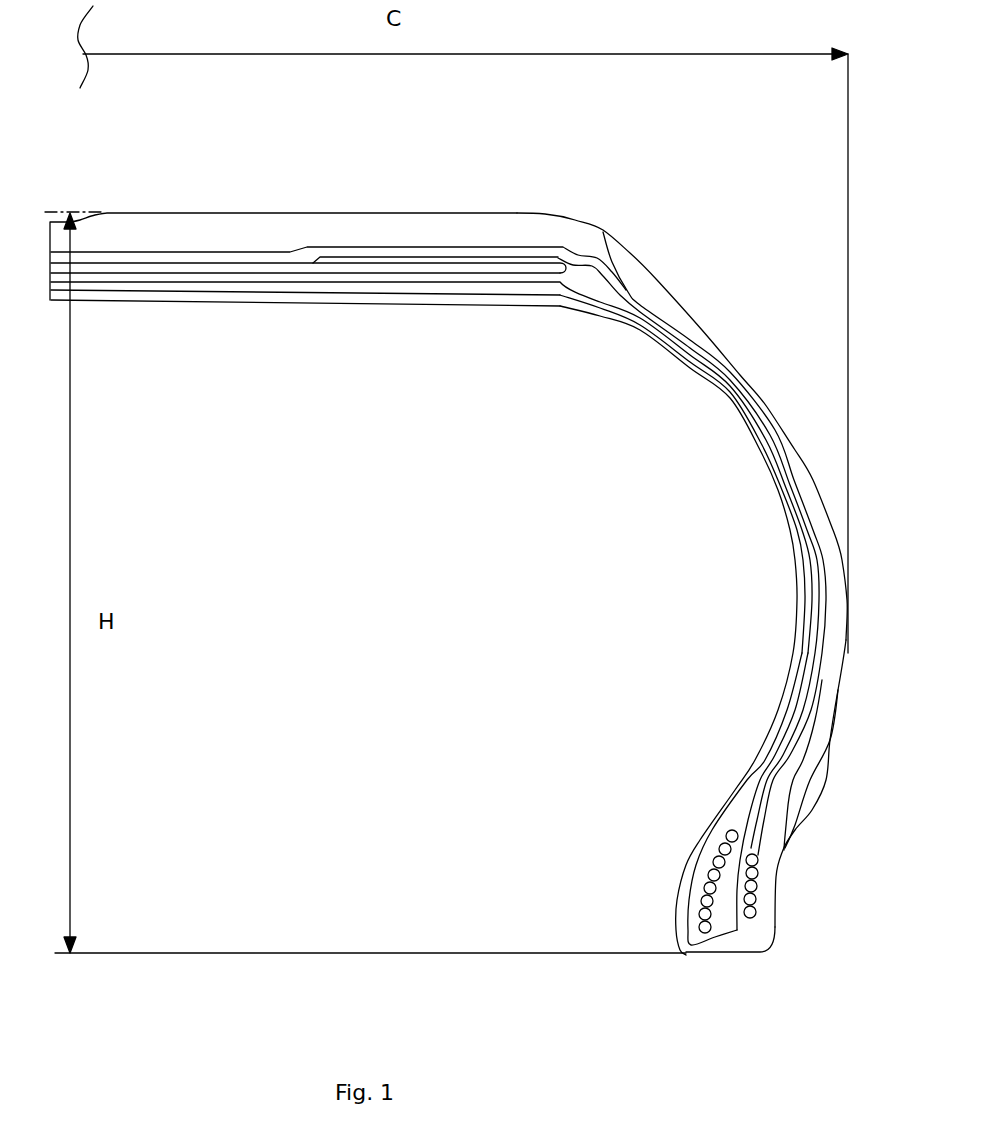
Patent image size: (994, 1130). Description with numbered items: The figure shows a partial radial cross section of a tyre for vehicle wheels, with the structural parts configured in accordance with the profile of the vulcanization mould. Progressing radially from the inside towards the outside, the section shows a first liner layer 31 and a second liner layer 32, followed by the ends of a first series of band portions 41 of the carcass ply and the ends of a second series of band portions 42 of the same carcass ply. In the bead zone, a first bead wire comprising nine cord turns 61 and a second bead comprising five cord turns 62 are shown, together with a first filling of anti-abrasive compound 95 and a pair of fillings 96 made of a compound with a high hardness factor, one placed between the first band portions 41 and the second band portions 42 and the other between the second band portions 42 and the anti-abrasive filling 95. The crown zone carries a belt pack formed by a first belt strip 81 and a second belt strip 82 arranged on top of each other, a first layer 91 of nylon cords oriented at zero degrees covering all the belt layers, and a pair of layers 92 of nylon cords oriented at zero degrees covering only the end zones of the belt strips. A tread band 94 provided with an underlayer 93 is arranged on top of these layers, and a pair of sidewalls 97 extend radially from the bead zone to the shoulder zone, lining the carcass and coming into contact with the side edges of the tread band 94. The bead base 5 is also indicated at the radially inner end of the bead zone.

The bead base 5 is at (762, 957).
The first liner layer 31 is at (800, 603).
The second liner layer 32 is at (803, 640).
The first series of band portions of carcass ply 41 is at (703, 867).
The second series of band portions of carcass ply 42 is at (750, 825).
The first bead wire cord turns 61 is at (705, 913).
The second bead cord turns 62 is at (757, 873).
The first belt strip 81 is at (498, 281).
The second belt strip 82 is at (415, 272).
The first layer of nylon cords 91 is at (237, 265).
The pair of layers of nylon cords 92 is at (498, 258).
The underlayer 93 is at (123, 253).
The tread band 94 is at (263, 227).
The filling of anti-abrasive compound 95 is at (827, 643).
The pair of fillings of high hardness compound 96 is at (793, 745).
The sidewalls 97 is at (758, 398).